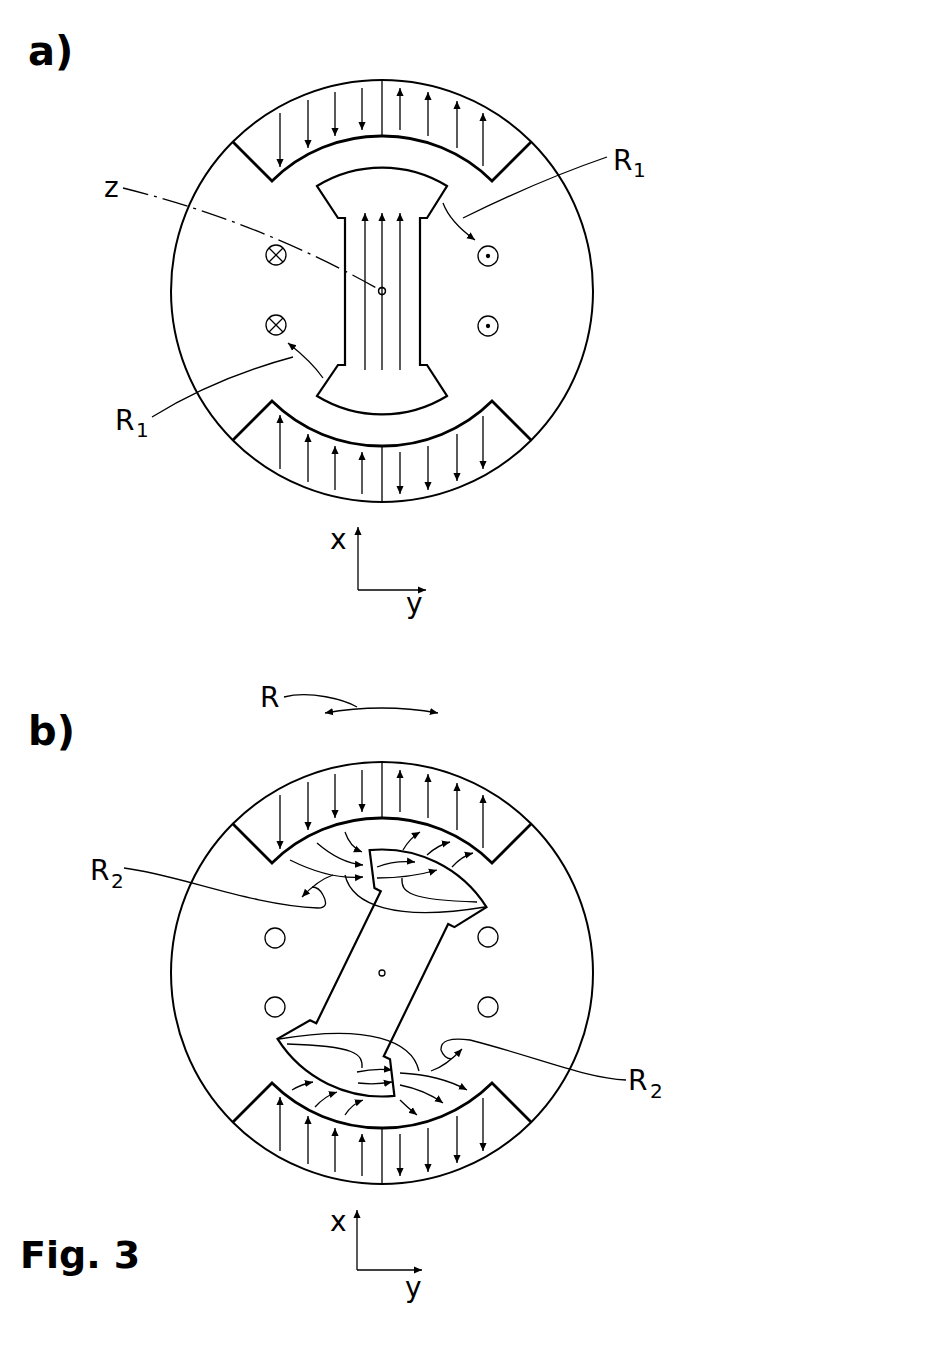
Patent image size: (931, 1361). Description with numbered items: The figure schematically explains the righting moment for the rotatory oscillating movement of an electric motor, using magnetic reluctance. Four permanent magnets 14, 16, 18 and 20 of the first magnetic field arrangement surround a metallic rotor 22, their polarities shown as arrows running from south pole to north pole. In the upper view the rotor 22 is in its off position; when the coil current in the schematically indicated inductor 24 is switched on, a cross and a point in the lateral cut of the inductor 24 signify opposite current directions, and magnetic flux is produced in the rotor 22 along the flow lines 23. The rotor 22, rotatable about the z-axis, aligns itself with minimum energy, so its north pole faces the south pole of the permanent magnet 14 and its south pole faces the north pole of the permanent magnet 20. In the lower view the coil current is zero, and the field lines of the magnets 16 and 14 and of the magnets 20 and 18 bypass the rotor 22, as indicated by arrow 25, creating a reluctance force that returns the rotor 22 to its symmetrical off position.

In FIG. 3a, the permanent magnet 14 is at (503, 135).
In FIG. 3b, the permanent magnet 14 is at (503, 817).
In FIG. 3a, the permanent magnet 16 is at (260, 132).
In FIG. 3b, the permanent magnet 16 is at (260, 814).
In FIG. 3a, the permanent magnet 18 is at (500, 445).
In FIG. 3b, the permanent magnet 18 is at (500, 1127).
In FIG. 3a, the permanent magnet 20 is at (258, 446).
In FIG. 3b, the permanent magnet 20 is at (258, 1128).
In FIG. 3a, the rotor 22 is at (408, 347).
In FIG. 3a, the flow lines 23 is at (378, 290).
In FIG. 3a, the inductor 24 is at (266, 255).
In FIG. 3b, the inductor 24 is at (265, 938).
In FIG. 3b, the arrow 25 is at (485, 903).